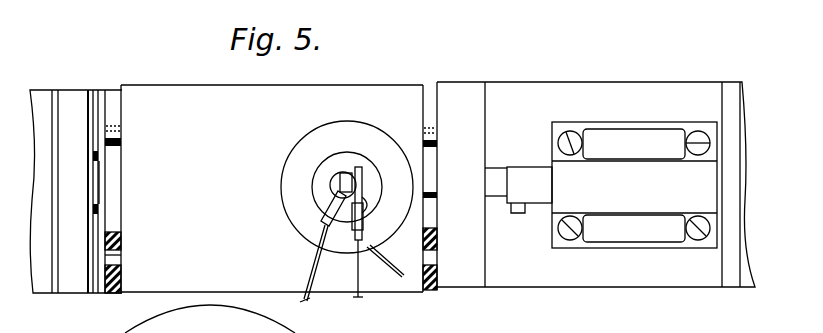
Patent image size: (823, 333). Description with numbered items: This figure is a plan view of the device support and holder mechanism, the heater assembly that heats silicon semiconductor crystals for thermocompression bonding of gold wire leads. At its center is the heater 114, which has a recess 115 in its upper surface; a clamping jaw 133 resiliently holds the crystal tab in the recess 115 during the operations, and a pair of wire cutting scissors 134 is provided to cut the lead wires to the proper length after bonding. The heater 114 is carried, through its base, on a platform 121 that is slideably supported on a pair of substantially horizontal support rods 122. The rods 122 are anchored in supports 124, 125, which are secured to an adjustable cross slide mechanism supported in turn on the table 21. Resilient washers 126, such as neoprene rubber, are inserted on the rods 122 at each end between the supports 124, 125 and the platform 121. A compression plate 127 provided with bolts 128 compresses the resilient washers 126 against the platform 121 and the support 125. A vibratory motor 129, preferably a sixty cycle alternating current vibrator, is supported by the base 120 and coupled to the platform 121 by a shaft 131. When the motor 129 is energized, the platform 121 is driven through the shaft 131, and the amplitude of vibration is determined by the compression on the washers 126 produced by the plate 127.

The table 21 is at (36, 126).
The heater 114 is at (332, 163).
The recess 115 is at (336, 178).
The base 120 is at (572, 106).
The platform 121 is at (236, 174).
The support rods 122 is at (113, 270).
The support 124 is at (78, 100).
The support 125 is at (470, 92).
The resilient washers 126 is at (112, 92).
The compression plate 127 is at (105, 198).
The bolts 128 is at (93, 156).
The vibratory motor 129 is at (642, 128).
The shaft 131 is at (490, 168).
The clamping jaw 133 is at (325, 207).
The wire cutting scissors 134 is at (363, 205).